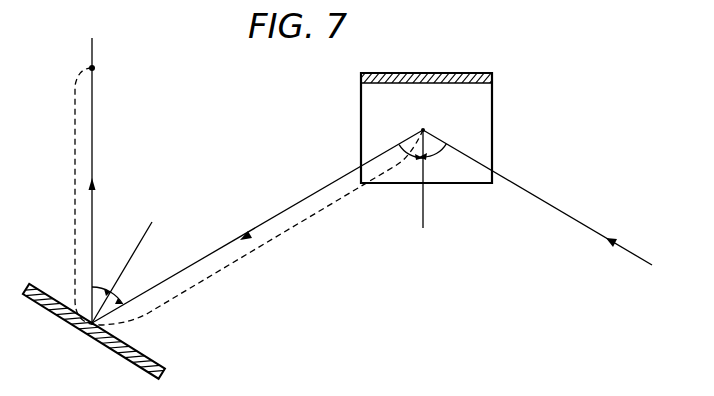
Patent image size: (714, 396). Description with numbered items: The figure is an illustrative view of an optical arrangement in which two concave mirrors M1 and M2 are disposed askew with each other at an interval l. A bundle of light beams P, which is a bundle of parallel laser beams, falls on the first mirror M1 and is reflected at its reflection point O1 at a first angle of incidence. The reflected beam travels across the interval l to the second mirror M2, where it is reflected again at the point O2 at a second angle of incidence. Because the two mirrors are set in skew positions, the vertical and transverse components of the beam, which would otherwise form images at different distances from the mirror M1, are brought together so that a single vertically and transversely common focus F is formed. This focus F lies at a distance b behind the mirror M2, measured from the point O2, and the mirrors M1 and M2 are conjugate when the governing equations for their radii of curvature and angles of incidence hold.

The common focus F is at (249, 191).
The focal distance b is at (82, 180).
The second concave mirror M2 is at (106, 331).
The reflection point on second mirror O2 is at (75, 341).
The interval between mirrors l is at (257, 226).
The first concave mirror M1 is at (439, 121).
The reflection point on first mirror O1 is at (423, 164).
The bundle of light beams P is at (537, 197).